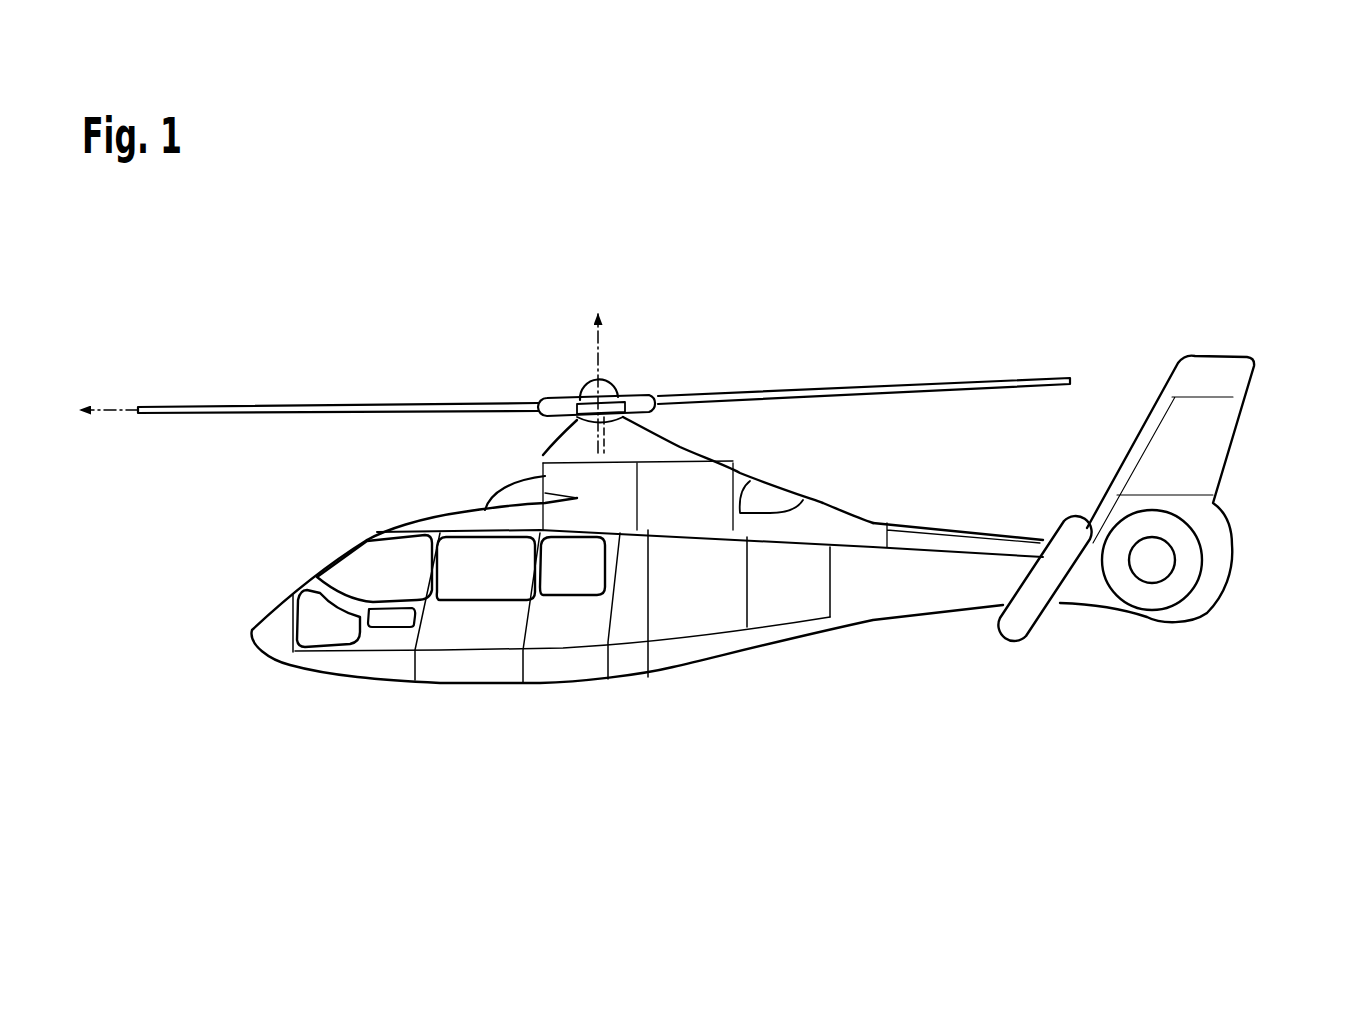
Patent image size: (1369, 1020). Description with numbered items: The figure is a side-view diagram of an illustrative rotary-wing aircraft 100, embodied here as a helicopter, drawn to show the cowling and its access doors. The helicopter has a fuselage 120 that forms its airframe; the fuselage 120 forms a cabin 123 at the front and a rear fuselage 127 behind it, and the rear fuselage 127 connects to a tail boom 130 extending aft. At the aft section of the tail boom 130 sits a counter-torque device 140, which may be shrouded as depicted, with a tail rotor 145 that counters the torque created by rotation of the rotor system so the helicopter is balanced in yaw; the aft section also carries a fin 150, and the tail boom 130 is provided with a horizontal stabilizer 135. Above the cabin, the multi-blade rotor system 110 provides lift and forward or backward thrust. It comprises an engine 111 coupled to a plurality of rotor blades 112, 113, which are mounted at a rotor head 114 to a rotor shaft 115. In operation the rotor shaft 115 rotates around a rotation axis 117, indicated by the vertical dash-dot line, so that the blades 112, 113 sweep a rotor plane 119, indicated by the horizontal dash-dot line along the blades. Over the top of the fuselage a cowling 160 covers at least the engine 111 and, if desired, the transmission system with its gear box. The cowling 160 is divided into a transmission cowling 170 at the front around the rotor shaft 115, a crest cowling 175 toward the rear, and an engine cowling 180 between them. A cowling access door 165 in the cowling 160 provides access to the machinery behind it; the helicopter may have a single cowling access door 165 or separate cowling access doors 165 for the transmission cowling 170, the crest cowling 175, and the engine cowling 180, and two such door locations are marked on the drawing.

The rotary-wing aircraft 100 is at (435, 302).
The rotor system 110 is at (407, 399).
The engine 111 is at (683, 507).
The rotor blade 112 is at (244, 407).
The rotor blade 113 is at (1043, 379).
The rotor head 114 is at (629, 383).
The rotor shaft 115 is at (593, 448).
The rotation axis 117 is at (598, 367).
The rotor plane 119 is at (95, 410).
The fuselage 120 is at (680, 653).
The cabin 123 is at (373, 573).
The rear fuselage 127 is at (783, 641).
The tail boom 130 is at (973, 560).
The horizontal stabilizer 135 is at (1033, 620).
The counter-torque device 140 is at (1207, 543).
The tail rotor 145 is at (1162, 582).
The fin 150 is at (1203, 403).
The cowling 160 is at (720, 443).
The cowling access door 165 is at (485, 498).
The transmission cowling 170 is at (543, 454).
The crest cowling 175 is at (822, 502).
The engine cowling 180 is at (683, 460).